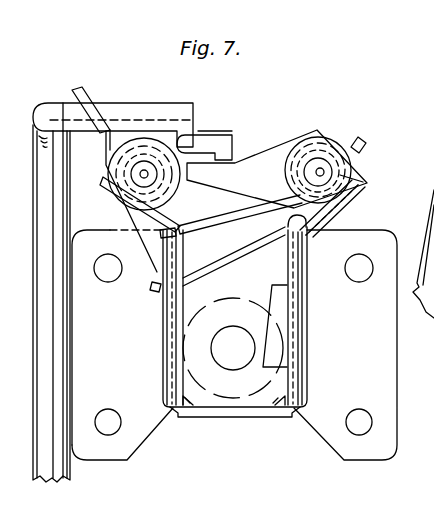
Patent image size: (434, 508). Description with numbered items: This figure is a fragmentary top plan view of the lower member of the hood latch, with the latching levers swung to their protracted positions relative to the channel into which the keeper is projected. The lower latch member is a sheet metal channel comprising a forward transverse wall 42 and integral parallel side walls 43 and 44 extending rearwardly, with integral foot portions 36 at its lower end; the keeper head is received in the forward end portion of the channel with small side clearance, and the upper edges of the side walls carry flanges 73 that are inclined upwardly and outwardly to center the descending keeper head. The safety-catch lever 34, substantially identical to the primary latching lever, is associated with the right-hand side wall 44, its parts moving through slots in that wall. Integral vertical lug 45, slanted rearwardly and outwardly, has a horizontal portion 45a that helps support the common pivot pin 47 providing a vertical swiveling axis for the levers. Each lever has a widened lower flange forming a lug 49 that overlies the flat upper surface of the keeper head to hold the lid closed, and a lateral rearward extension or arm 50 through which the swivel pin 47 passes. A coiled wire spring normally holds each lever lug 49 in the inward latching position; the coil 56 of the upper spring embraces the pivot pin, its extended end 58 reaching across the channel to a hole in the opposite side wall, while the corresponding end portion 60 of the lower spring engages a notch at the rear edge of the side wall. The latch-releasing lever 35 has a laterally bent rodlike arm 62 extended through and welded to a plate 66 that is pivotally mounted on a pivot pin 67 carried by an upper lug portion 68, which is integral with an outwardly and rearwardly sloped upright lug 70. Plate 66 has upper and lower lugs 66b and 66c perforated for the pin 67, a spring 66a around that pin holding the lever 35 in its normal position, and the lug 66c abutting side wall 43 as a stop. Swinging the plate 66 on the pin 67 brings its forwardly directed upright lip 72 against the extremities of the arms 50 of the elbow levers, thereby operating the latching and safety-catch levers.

The safety-catch lever 34 is at (323, 217).
The latch-releasing lever 35 is at (53, 477).
The foot portions 36 is at (135, 433).
The forward transverse wall 42 is at (246, 411).
The side wall 43 is at (185, 302).
The side wall 44 is at (289, 280).
The vertical lug 45 is at (362, 181).
The horizontal portion of lug 45a is at (360, 157).
The pivot pin 47 is at (323, 167).
The lug 49 is at (270, 358).
The rearward extension or arm 50 is at (258, 195).
The coil of upper spring 56 is at (309, 135).
The extended end of upper spring 58 is at (237, 250).
The end portion of lower spring 60 is at (219, 218).
The laterally bent arm 62 is at (130, 112).
The plate 66 is at (91, 102).
The spring 66a is at (203, 145).
The upper lug 66b is at (178, 233).
The lower lug 66c is at (152, 253).
The pivot pin 67 is at (143, 180).
The upper lug portion 68 is at (117, 163).
The upright lug 70 is at (110, 188).
The upright lip 72 is at (234, 153).
The flange 73 is at (167, 330).